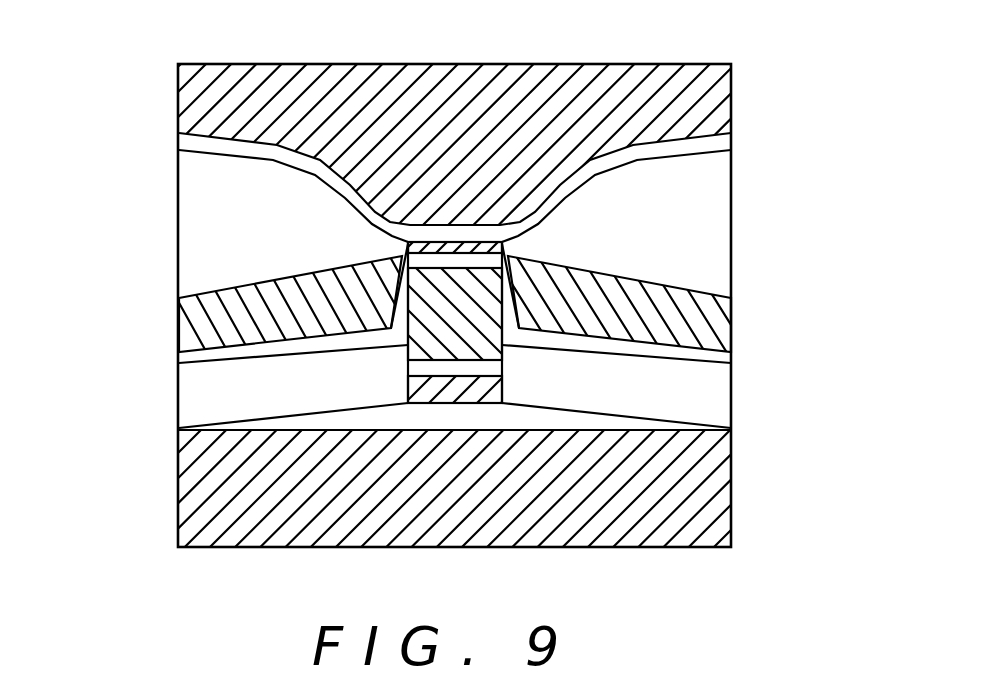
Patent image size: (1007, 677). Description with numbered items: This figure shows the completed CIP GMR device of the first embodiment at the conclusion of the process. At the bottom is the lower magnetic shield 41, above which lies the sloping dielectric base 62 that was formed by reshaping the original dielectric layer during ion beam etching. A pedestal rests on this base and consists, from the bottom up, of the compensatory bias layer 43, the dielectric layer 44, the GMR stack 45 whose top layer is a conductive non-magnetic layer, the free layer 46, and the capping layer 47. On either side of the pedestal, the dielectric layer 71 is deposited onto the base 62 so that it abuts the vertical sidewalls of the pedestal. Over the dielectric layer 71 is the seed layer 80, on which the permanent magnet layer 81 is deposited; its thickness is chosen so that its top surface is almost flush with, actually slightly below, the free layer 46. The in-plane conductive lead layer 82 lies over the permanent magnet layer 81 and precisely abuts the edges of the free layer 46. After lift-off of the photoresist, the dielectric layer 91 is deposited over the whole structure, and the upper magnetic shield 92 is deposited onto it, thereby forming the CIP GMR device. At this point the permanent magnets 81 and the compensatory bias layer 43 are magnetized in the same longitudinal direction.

The upper magnetic shield 92 is at (703, 100).
The dielectric layer 91 is at (705, 143).
The in-plane conductive lead layer 82 is at (190, 213).
The capping layer 47 is at (485, 243).
The free layer 46 is at (405, 256).
The permanent magnet layer 81 is at (192, 334).
The seed layer 80 is at (195, 361).
The dielectric layer 71 is at (190, 401).
The lower magnetic shield 41 is at (190, 482).
The GMR stack 45 is at (430, 346).
The dielectric layer 44 is at (443, 365).
The compensatory bias layer 43 is at (452, 388).
The sloping dielectric base 62 is at (538, 425).